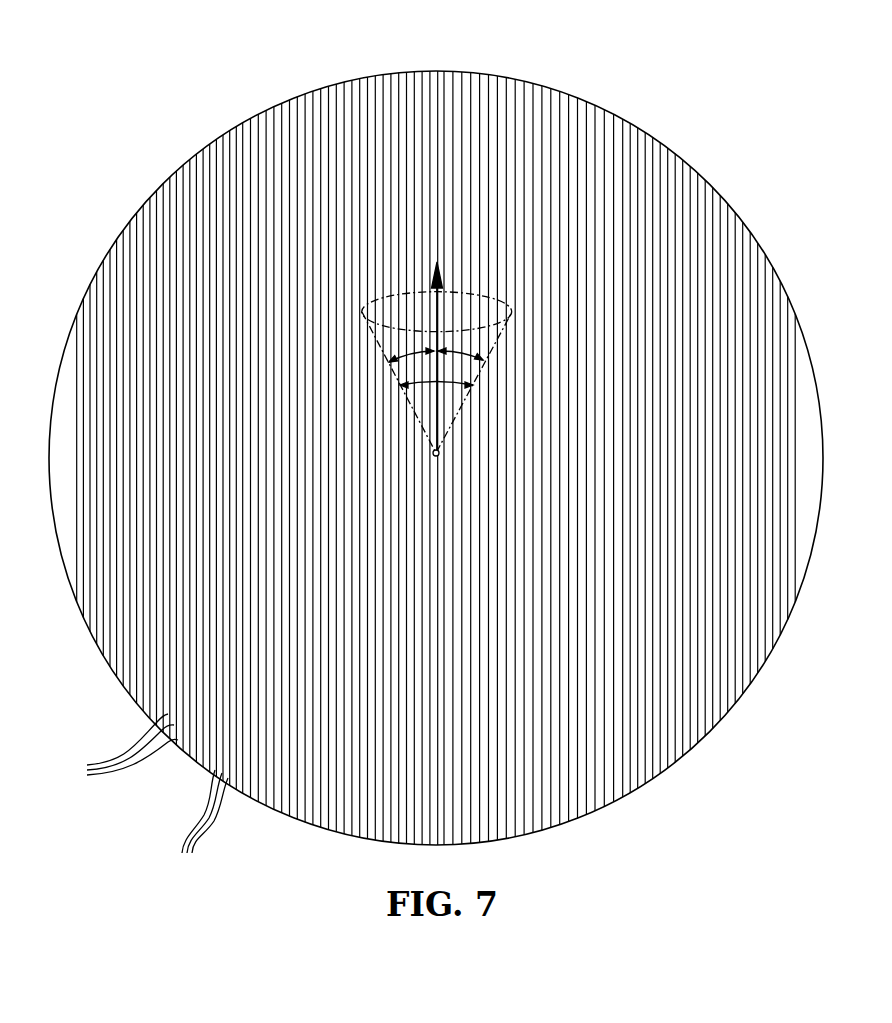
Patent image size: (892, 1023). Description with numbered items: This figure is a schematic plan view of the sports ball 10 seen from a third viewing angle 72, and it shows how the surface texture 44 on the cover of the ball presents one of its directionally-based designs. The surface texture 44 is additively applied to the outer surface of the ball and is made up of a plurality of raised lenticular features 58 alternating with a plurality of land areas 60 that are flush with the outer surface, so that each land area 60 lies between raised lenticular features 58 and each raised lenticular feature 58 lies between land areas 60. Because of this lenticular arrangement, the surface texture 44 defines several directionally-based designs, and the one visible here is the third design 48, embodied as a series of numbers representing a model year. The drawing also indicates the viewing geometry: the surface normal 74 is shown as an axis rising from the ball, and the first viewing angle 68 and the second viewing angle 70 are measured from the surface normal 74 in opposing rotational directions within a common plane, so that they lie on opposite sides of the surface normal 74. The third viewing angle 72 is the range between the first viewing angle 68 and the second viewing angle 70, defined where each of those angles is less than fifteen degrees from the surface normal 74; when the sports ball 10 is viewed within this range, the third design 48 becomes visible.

The sports ball 10 is at (688, 112).
The surface texture 44 is at (757, 628).
The third design 48 is at (497, 487).
The raised lenticular features 58 is at (121, 748).
The land areas 60 is at (202, 824).
The first viewing angle 68 is at (404, 356).
The second viewing angle 70 is at (468, 356).
The third viewing angle 72 is at (436, 384).
The surface normal 74 is at (444, 275).